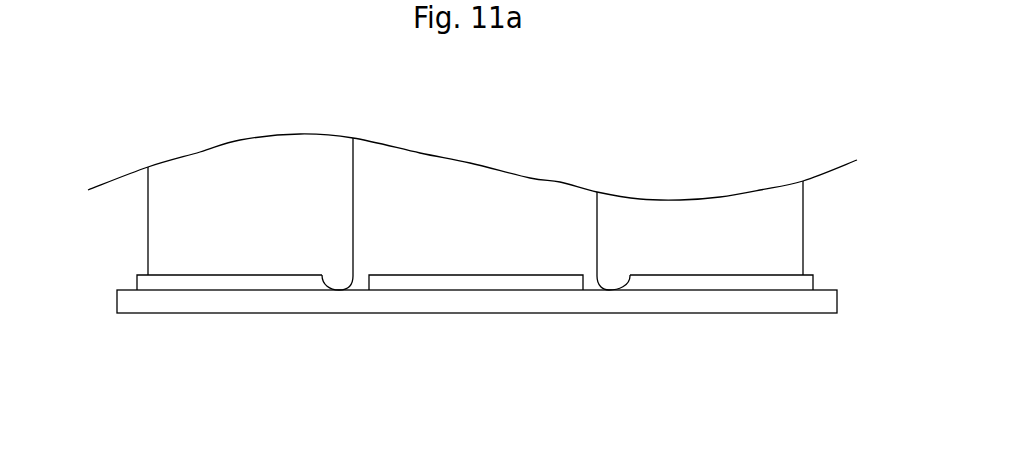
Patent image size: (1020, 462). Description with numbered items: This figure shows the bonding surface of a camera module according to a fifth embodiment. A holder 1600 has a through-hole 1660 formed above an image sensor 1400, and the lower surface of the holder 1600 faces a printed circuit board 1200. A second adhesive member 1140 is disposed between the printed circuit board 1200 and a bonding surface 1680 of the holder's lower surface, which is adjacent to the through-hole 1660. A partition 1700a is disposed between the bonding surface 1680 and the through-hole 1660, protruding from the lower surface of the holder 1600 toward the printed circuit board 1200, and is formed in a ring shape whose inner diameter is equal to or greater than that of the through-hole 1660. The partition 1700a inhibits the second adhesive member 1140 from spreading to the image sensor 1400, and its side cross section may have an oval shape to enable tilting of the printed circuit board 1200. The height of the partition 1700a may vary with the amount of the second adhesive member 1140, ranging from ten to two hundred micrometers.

The through-hole 1660 is at (470, 180).
The bonding surface 1680 is at (168, 272).
The partition 1700a is at (340, 282).
The image sensor 1400 is at (472, 285).
The second adhesive member 1140 is at (791, 282).
The holder 1600 is at (792, 220).
The printed circuit board 1200 is at (193, 303).